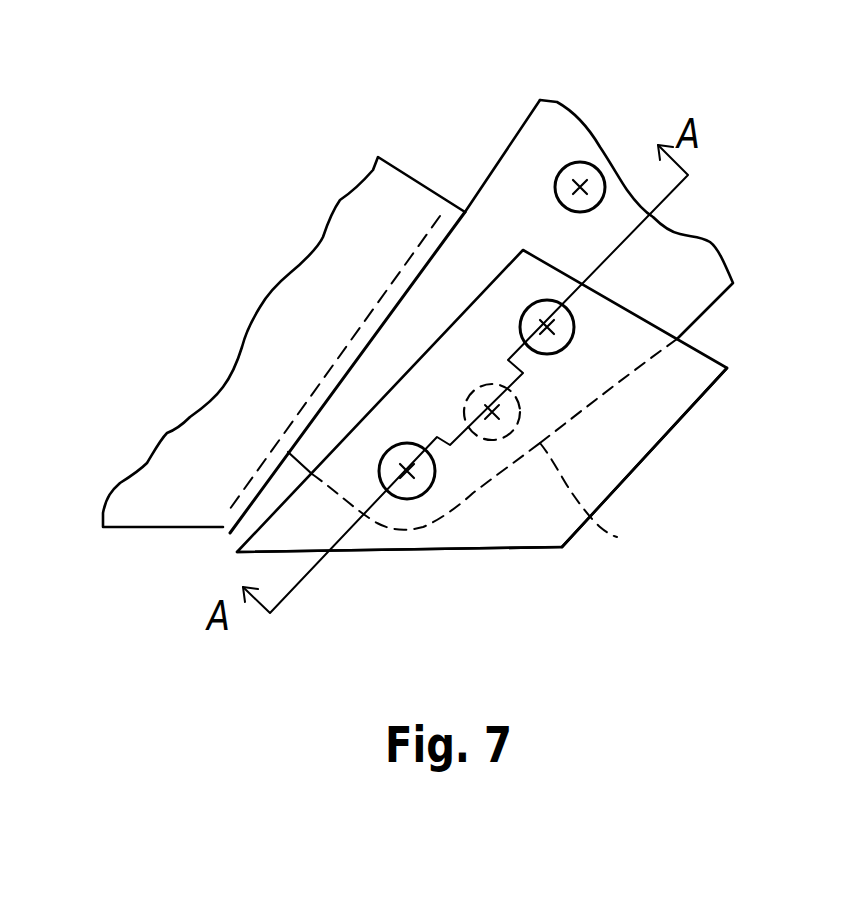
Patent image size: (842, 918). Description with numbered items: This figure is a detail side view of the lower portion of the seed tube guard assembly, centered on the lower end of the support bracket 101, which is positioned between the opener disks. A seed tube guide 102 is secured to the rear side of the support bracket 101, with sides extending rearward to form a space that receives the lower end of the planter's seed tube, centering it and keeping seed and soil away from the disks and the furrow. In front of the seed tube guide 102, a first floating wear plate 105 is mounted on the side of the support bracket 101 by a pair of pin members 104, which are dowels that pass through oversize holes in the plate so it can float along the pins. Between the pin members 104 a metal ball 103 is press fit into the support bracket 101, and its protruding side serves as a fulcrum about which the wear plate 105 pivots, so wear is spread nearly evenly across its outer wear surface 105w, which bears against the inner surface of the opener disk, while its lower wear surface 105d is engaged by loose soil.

The support bracket 101 is at (553, 127).
The seed tube guide 102 is at (360, 223).
The metal ball 103 is at (482, 456).
The pin members 104 is at (563, 327).
The first floating wear plate 105 is at (593, 472).
The outer wear surface 105w is at (630, 412).
The lower wear surface 105d is at (398, 552).